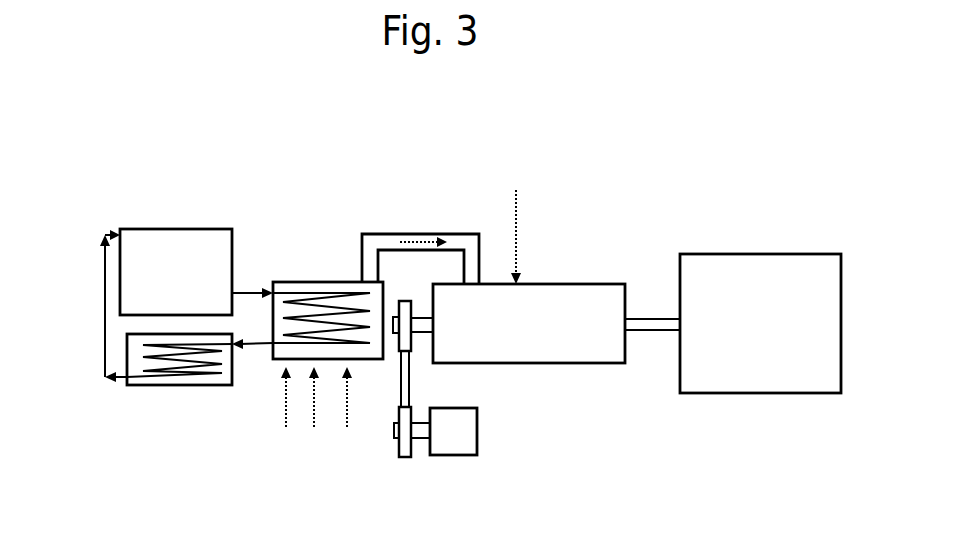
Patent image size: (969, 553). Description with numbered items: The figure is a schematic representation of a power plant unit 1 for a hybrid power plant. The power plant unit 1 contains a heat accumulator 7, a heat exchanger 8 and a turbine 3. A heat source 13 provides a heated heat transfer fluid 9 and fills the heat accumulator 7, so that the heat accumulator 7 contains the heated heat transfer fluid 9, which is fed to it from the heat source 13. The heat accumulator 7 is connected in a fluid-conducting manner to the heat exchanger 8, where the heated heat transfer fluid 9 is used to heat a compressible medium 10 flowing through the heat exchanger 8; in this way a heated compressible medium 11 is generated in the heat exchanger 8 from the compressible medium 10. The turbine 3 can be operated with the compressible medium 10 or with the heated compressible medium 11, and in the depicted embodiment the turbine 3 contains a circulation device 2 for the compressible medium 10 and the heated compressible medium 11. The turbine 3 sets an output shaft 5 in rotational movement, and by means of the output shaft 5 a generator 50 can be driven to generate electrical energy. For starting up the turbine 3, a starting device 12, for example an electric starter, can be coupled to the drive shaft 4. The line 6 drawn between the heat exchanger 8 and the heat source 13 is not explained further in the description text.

The power plant unit 1 is at (598, 174).
The circulation device 2 is at (333, 359).
The turbine 3 is at (542, 350).
The drive shaft 4 is at (405, 320).
The output shaft 5 is at (643, 327).
The working fluid line 6 is at (249, 347).
The heat accumulator 7 is at (171, 229).
The heat exchanger 8 is at (302, 282).
The heated heat transfer fluid 9 is at (248, 293).
The compressible medium 10 is at (516, 222).
The heated compressible medium 11 is at (433, 235).
The starting device 12 is at (447, 433).
The heat source 13 is at (185, 380).
The generator 50 is at (758, 350).